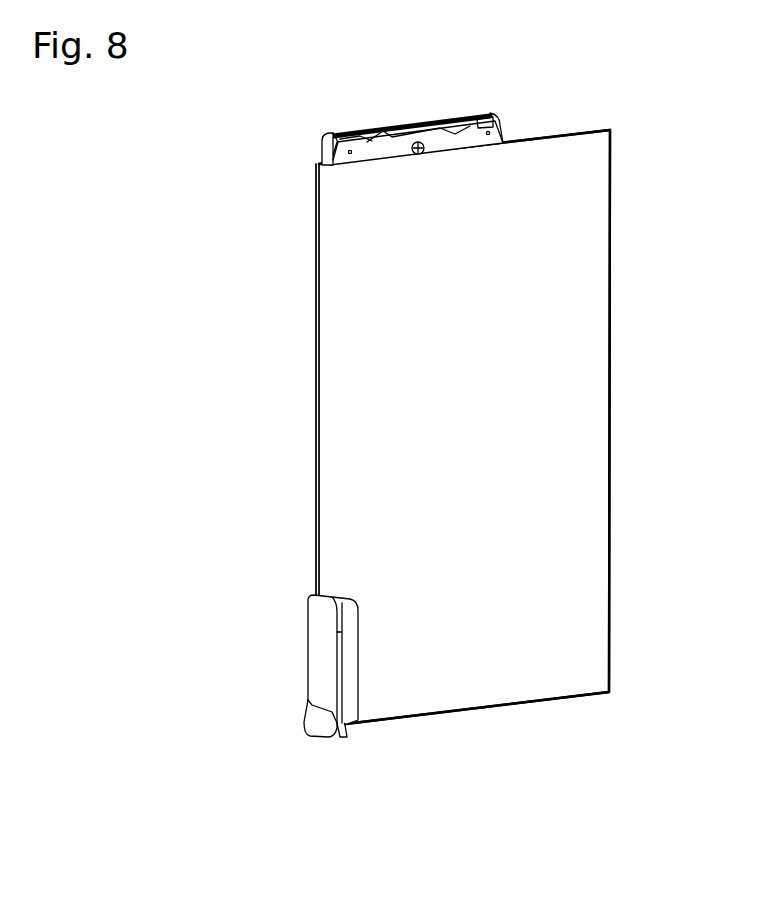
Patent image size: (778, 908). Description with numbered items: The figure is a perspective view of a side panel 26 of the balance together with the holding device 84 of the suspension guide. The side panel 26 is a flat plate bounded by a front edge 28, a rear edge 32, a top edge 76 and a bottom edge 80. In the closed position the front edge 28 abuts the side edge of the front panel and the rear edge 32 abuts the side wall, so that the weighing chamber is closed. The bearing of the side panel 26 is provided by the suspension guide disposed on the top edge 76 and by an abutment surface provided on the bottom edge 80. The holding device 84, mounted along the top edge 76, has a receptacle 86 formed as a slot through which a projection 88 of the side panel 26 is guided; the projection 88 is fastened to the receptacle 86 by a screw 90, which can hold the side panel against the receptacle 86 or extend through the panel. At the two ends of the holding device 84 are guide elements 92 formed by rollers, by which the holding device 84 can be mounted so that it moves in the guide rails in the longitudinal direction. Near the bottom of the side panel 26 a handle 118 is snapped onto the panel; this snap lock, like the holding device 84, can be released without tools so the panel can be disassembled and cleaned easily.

The side panel 26 is at (588, 420).
The front edge 28 is at (317, 513).
The rear edge 32 is at (608, 520).
The top edge 76 is at (558, 133).
The bottom edge 80 is at (483, 710).
The holding device 84 is at (473, 141).
The receptacle 86 is at (375, 138).
The projection 88 is at (438, 128).
The screw 90 is at (419, 155).
The guide elements 92 is at (332, 133).
The handle 118 is at (348, 638).